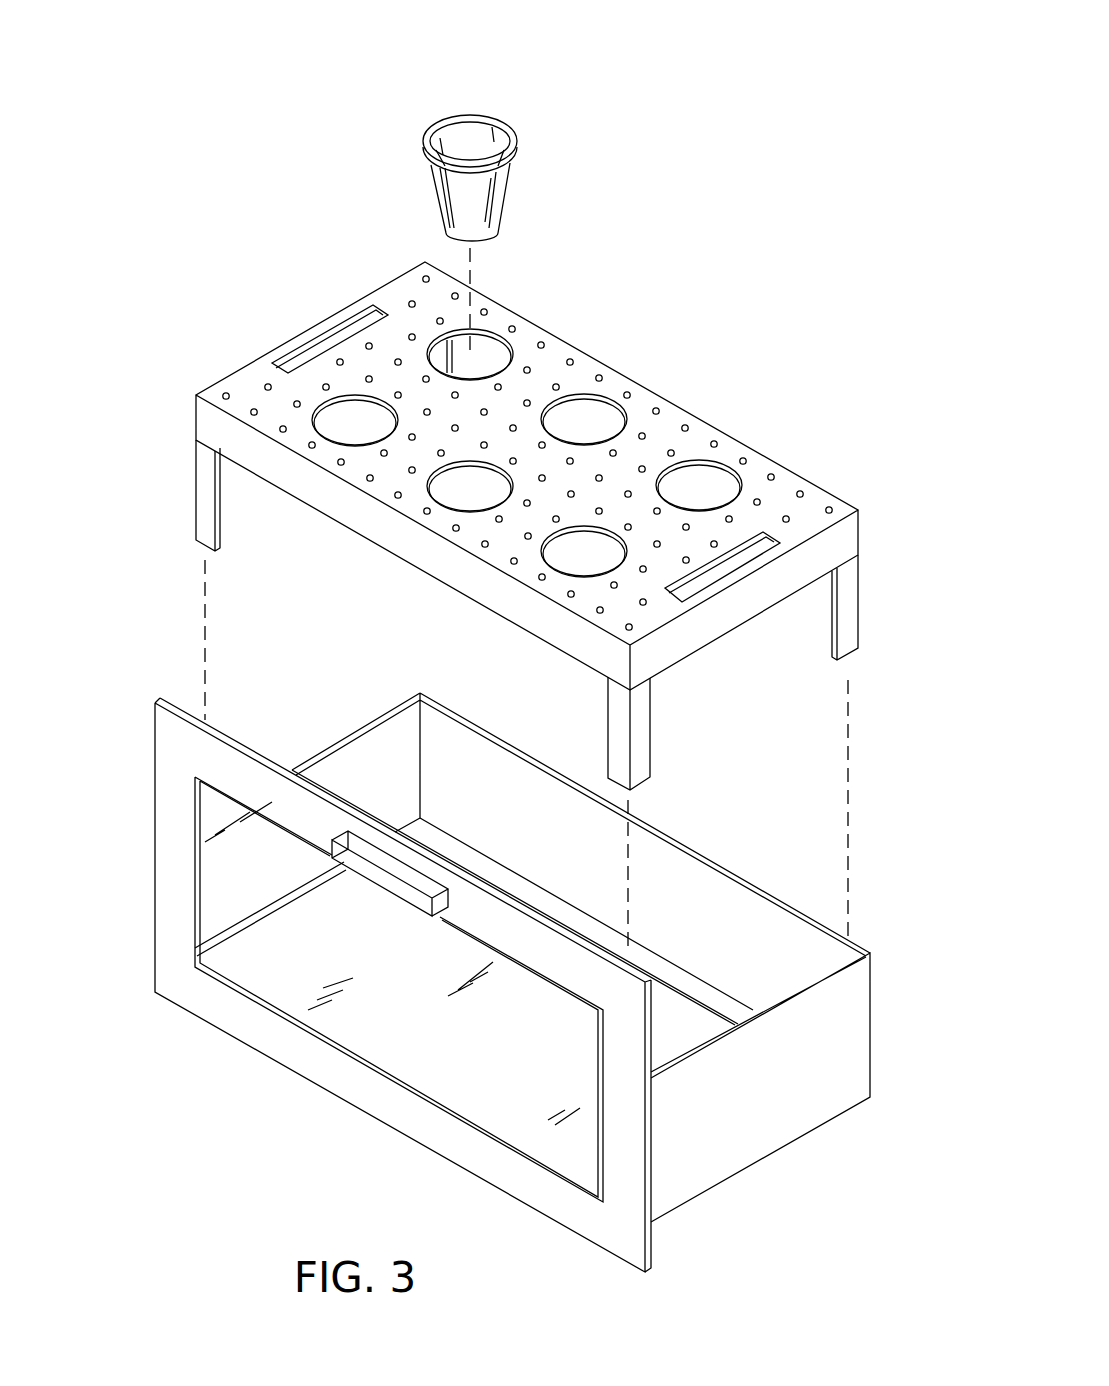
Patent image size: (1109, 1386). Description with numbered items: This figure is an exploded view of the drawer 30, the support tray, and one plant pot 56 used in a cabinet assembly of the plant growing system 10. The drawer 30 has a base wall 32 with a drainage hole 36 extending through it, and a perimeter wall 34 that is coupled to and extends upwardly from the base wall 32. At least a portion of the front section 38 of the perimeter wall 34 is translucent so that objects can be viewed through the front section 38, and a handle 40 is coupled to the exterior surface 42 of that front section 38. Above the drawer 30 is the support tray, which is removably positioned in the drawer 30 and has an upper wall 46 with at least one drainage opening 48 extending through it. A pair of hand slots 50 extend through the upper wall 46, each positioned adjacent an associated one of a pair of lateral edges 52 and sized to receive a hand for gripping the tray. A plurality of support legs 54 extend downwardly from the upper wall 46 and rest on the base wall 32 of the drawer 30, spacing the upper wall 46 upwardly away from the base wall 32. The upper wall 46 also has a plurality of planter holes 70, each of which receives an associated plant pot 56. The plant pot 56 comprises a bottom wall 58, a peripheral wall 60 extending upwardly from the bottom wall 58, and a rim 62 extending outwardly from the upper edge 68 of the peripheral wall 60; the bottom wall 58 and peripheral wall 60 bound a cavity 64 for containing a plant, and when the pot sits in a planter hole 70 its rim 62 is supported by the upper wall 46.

The plant growing system 10 is at (772, 108).
The drawer 30 is at (105, 930).
The base wall 32 is at (672, 978).
The perimeter wall 34 is at (818, 1067).
The drainage hole 36 is at (702, 1008).
The front section 38 is at (440, 1045).
The handle 40 is at (400, 888).
The exterior surface 42 is at (178, 748).
The upper wall 46 is at (667, 430).
The drainage opening 48 is at (570, 360).
The hand slot 50 is at (320, 305).
The lateral edge 52 is at (270, 358).
The support leg 54 is at (207, 497).
The plant pot 56 is at (562, 170).
The bottom wall 58 is at (500, 253).
The peripheral wall 60 is at (460, 195).
The rim 62 is at (425, 133).
The cavity 64 is at (453, 103).
The upper edge 68 is at (494, 112).
The planter hole 70 is at (518, 325).